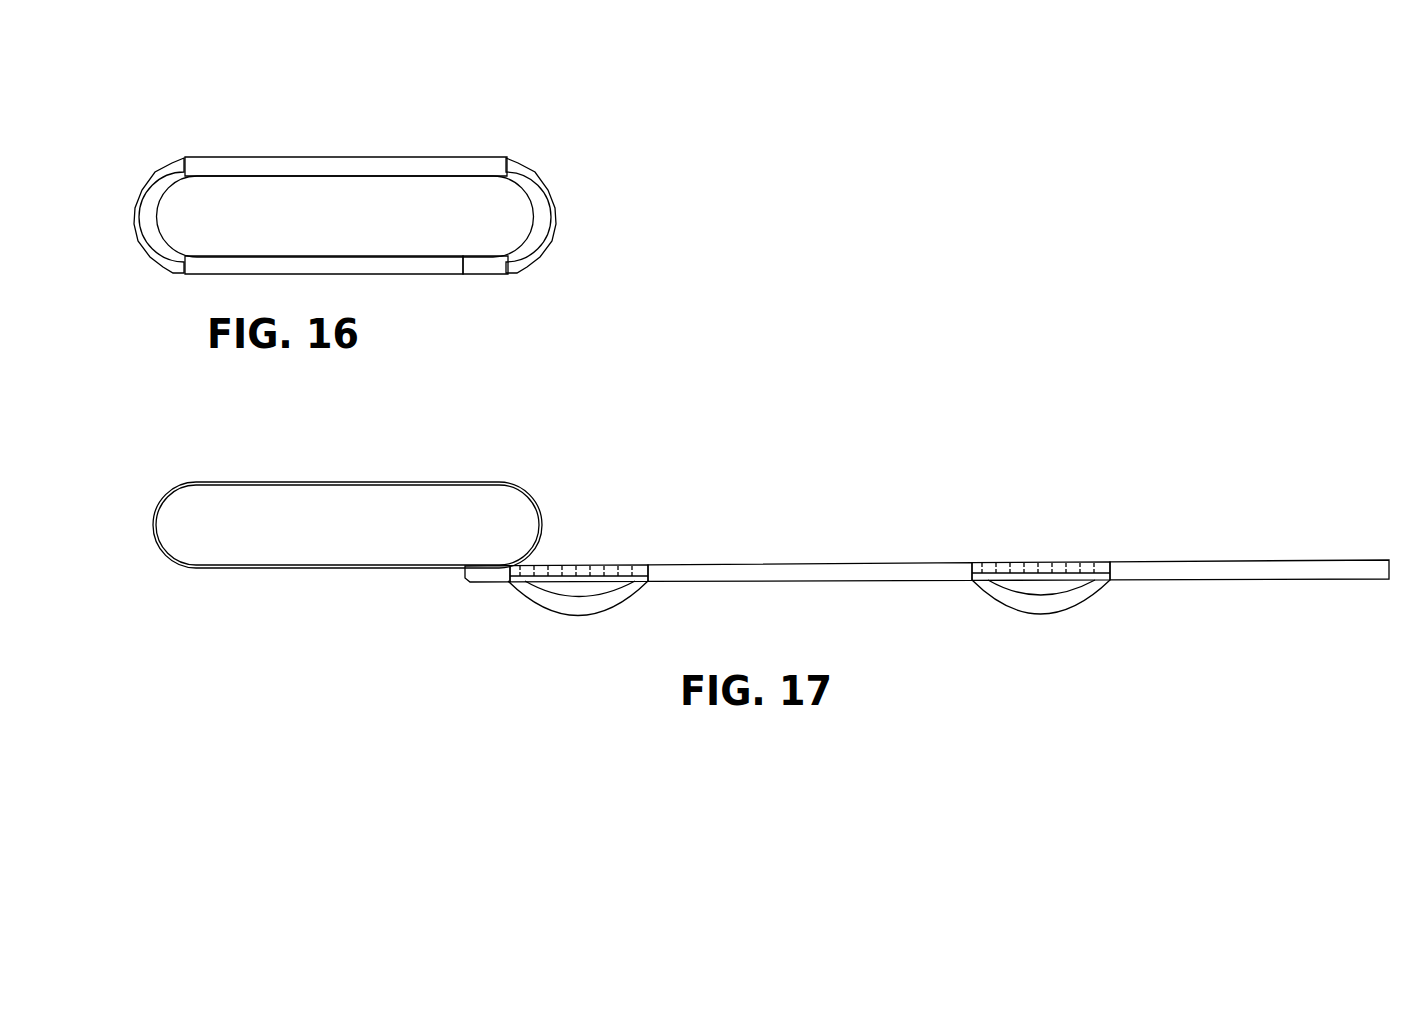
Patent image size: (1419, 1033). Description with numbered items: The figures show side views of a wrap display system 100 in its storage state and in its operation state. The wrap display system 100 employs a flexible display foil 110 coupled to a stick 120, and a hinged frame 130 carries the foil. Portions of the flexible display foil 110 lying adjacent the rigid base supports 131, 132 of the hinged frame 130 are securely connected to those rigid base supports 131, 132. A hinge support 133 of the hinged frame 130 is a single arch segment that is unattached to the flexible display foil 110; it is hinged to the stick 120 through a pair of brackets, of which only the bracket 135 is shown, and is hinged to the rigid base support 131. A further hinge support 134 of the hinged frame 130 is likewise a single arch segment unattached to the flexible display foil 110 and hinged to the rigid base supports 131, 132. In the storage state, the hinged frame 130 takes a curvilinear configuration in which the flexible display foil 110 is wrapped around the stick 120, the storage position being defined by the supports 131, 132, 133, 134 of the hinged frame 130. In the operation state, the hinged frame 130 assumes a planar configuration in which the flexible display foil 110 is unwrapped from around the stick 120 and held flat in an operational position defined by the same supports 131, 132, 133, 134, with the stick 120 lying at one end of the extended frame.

In FIG. 16, the wrap display system 100 is at (600, 114).
In FIG. 17, the wrap display system 100 is at (905, 432).
In FIG. 17, the flexible display foil 110 is at (572, 558).
In FIG. 16, the stick 120 is at (421, 168).
In FIG. 17, the stick 120 is at (500, 474).
In FIG. 17, the hinged frame 130 is at (915, 655).
In FIG. 16, the rigid base support 131 is at (283, 158).
In FIG. 17, the rigid base support 131 is at (800, 574).
In FIG. 16, the rigid base support 132 is at (390, 278).
In FIG. 17, the rigid base support 132 is at (1175, 574).
In FIG. 16, the hinge support 133 is at (549, 230).
In FIG. 17, the hinge support 133 is at (596, 606).
In FIG. 16, the hinge support 134 is at (158, 262).
In FIG. 17, the hinge support 134 is at (1058, 603).
In FIG. 16, the bracket 135 is at (485, 278).
In FIG. 17, the bracket 135 is at (488, 584).